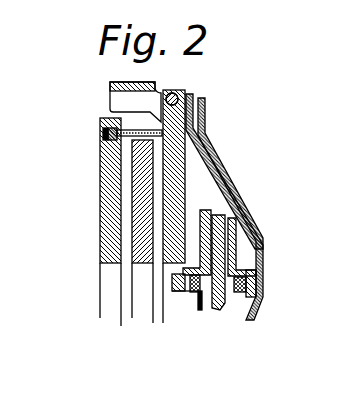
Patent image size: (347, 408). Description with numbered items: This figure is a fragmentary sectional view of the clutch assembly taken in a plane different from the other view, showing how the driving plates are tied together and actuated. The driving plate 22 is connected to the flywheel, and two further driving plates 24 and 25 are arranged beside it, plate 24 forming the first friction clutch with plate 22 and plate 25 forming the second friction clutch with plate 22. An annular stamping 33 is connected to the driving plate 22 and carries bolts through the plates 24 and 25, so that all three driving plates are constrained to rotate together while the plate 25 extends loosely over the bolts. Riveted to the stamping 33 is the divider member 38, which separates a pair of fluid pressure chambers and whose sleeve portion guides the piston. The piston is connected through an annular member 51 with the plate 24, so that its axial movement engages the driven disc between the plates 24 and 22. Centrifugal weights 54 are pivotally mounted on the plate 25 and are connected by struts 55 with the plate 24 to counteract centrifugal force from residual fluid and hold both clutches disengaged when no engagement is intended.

The centrifugal weights 54 is at (117, 100).
The struts 55 is at (118, 138).
The driving plate 24 is at (104, 193).
The driving plate 22 is at (142, 228).
The driving plate 25 is at (185, 173).
The annular stamping 33 is at (233, 203).
The annular member 51 is at (261, 234).
The divider member 38 is at (222, 306).